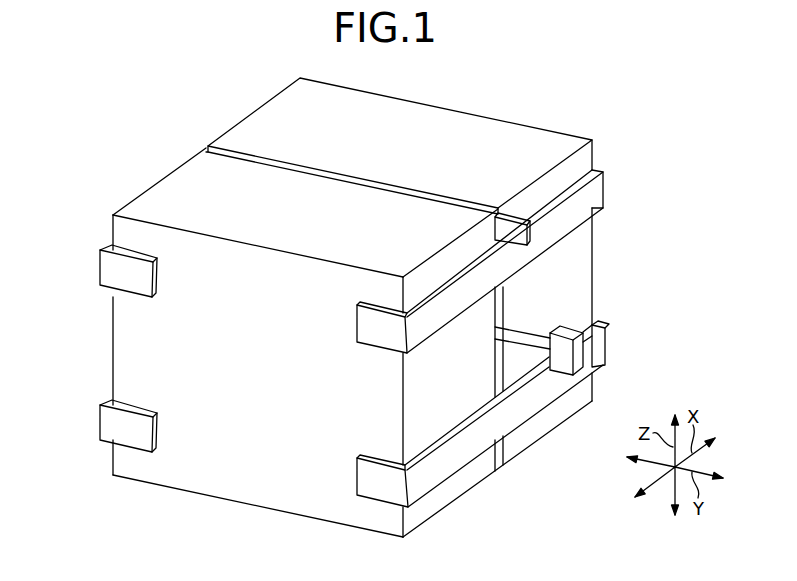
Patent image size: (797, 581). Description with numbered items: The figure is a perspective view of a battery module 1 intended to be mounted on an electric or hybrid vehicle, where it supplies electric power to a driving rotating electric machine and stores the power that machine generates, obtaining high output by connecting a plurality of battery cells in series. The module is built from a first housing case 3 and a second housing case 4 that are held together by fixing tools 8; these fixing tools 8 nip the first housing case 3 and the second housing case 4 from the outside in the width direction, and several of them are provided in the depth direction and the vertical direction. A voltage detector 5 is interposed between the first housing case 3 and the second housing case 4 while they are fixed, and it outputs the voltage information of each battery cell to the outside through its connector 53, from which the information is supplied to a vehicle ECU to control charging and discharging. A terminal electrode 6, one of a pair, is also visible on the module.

The battery module 1 is at (176, 120).
The first housing case 3 is at (250, 110).
The second housing case 4 is at (150, 183).
The voltage detector 5 is at (528, 327).
The terminal electrode 6 is at (508, 232).
The fixing tool 8 is at (100, 262).
The connector 53 is at (560, 360).